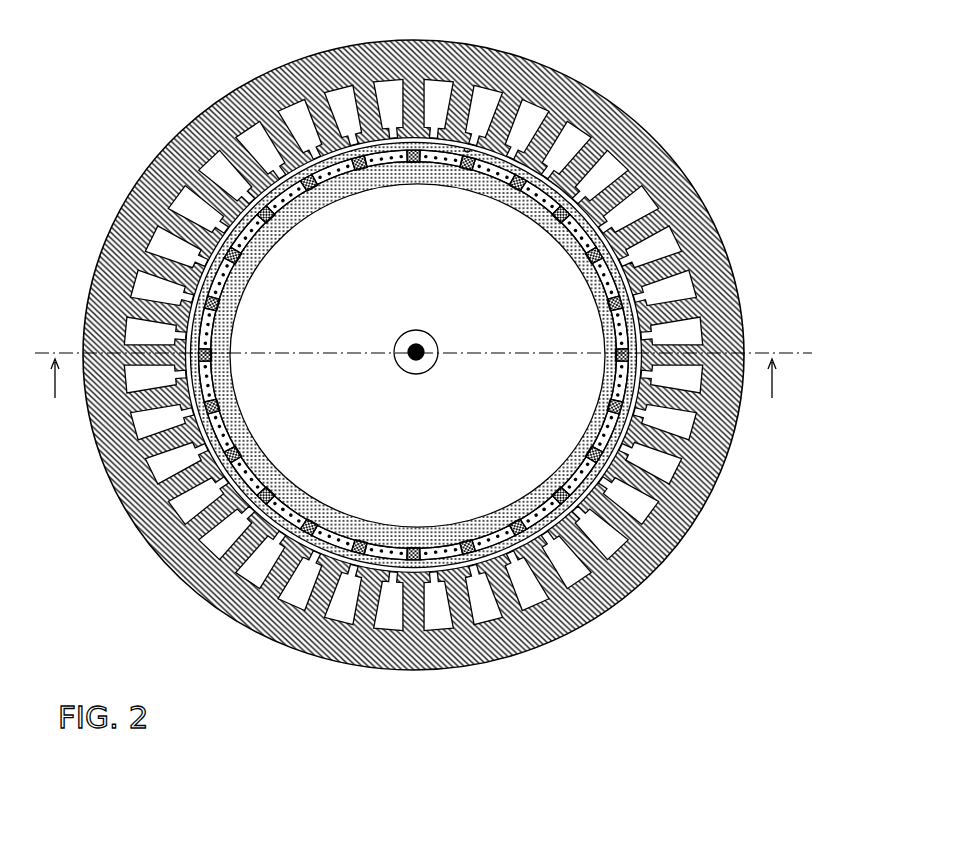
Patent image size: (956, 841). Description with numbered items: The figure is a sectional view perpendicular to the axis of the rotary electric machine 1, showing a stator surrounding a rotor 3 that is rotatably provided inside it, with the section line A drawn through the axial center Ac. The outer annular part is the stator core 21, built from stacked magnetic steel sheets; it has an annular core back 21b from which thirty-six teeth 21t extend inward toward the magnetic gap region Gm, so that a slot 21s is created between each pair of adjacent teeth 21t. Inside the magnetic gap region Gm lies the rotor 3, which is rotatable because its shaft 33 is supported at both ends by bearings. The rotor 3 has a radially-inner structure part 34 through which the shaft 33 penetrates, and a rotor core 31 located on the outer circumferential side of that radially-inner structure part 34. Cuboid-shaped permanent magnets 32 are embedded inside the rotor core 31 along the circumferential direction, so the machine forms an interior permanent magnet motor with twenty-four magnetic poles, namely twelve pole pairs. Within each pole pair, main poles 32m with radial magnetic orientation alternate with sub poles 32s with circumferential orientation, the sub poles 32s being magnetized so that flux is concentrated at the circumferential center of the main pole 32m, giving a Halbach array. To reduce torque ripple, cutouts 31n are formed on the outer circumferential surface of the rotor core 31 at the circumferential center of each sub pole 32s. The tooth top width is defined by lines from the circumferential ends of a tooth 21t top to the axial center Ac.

The rotary electric machine 1 is at (666, 82).
The magnetic gap region Gm is at (540, 122).
The stator core 21 is at (757, 247).
The slot 21s is at (622, 170).
The core back 21b is at (606, 179).
The tooth 21t is at (672, 238).
The rotor 3 is at (770, 497).
The rotor core 31 is at (438, 360).
The cutout 31n is at (468, 133).
The permanent magnet 32 is at (722, 596).
The main pole 32m is at (548, 508).
The sub pole 32s is at (534, 519).
The shaft 33 is at (515, 448).
The radially-inner structure part 34 is at (560, 490).
The axial center Ac is at (400, 356).
The section line A is at (423, 393).